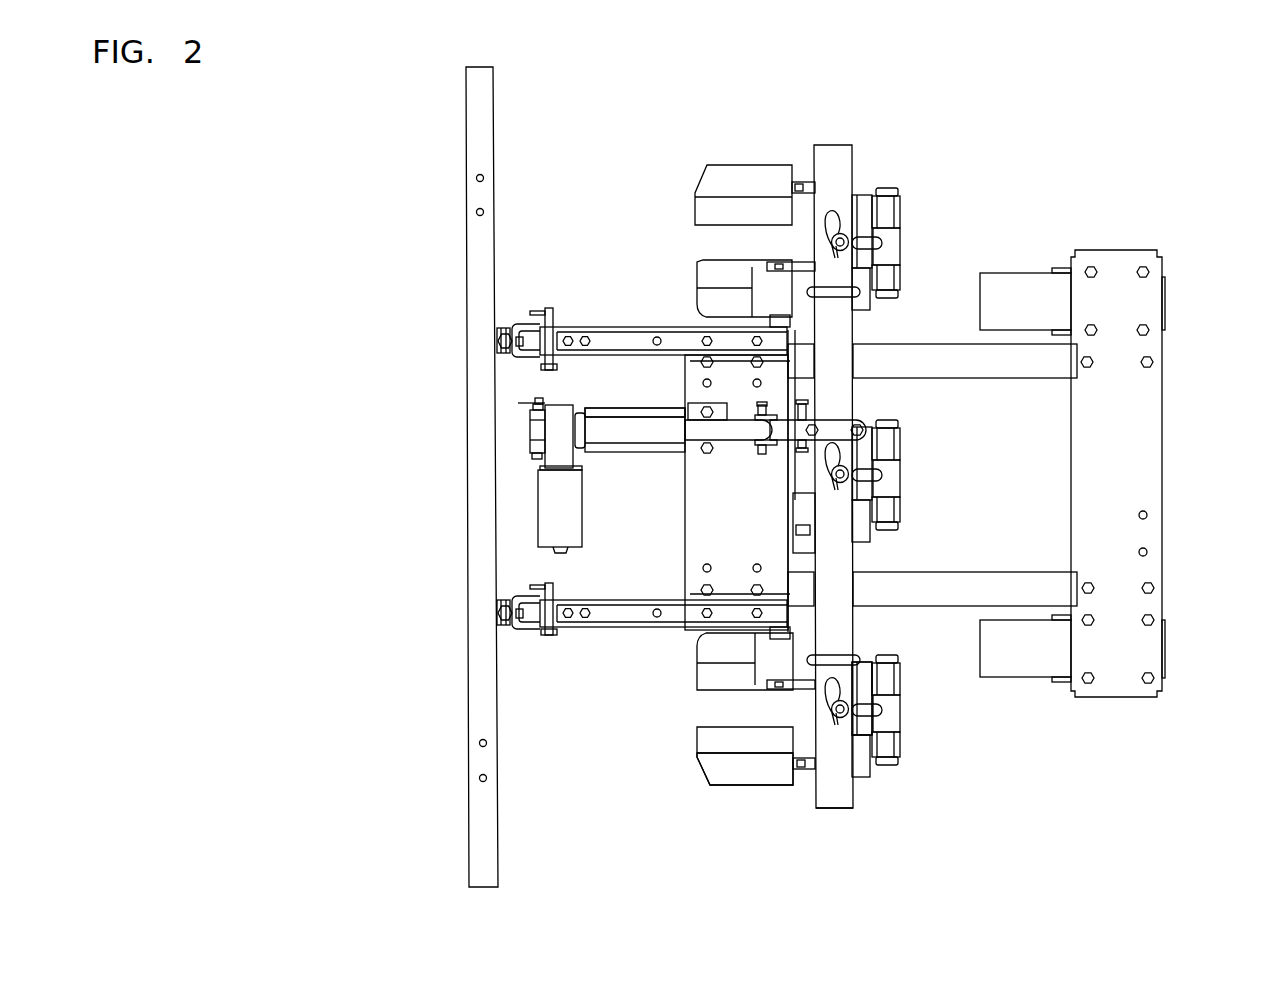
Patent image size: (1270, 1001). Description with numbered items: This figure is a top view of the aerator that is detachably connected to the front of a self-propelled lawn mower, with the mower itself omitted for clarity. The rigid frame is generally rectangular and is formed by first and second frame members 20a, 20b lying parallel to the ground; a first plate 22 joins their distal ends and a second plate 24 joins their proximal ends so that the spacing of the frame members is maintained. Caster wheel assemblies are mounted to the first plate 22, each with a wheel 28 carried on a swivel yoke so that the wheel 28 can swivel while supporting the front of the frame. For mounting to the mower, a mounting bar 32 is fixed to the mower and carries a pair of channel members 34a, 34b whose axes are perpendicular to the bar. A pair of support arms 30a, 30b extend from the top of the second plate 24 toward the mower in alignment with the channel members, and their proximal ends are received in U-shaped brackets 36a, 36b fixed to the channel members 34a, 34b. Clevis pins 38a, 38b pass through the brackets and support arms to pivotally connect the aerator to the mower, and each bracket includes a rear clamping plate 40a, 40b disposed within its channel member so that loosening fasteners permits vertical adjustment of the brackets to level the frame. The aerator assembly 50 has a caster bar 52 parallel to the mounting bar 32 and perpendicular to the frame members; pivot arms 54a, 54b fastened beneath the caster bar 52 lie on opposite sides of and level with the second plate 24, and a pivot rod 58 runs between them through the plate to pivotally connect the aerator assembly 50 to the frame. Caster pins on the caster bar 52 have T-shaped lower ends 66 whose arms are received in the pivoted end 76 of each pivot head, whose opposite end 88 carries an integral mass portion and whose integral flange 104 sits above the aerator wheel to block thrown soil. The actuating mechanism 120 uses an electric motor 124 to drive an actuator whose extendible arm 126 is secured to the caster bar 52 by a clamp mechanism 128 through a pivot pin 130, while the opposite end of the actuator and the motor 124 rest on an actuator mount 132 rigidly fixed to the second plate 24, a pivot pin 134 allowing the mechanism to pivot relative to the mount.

The first frame member 20a is at (1000, 585).
The second frame member 20b is at (1003, 363).
The first plate 22 is at (1150, 455).
The second plate 24 is at (700, 537).
The wheel 28 is at (1009, 283).
The first support arm 30a is at (655, 600).
The second support arm 30b is at (602, 330).
The mounting bar 32 is at (477, 440).
The first channel member 34a is at (505, 633).
The second channel member 34b is at (502, 325).
The first U-shaped bracket 36a is at (530, 632).
The second U-shaped bracket 36b is at (520, 368).
The first clevis pin 38a is at (556, 592).
The second clevis pin 38b is at (550, 310).
The first rear clamping plate 40a is at (505, 613).
The second rear clamping plate 40b is at (505, 341).
The aerator assembly 50 is at (847, 112).
The caster bar 52 is at (840, 792).
The first pivot arm 54a is at (762, 672).
The second pivot arm 54b is at (765, 290).
The pivot rod 58 is at (768, 323).
The T-shaped lower end 66 is at (900, 708).
The pivoted end 76 is at (900, 737).
The opposite end 88 is at (706, 742).
The integral flange 104 is at (724, 778).
The actuating mechanism 120 is at (616, 468).
The electric motor 124 is at (545, 525).
The extendible arm 126 is at (716, 428).
The clamp mechanism 128 is at (830, 430).
The pivot pin 130 is at (762, 454).
The actuator mount 132 is at (637, 408).
The pivot pin 134 is at (532, 437).